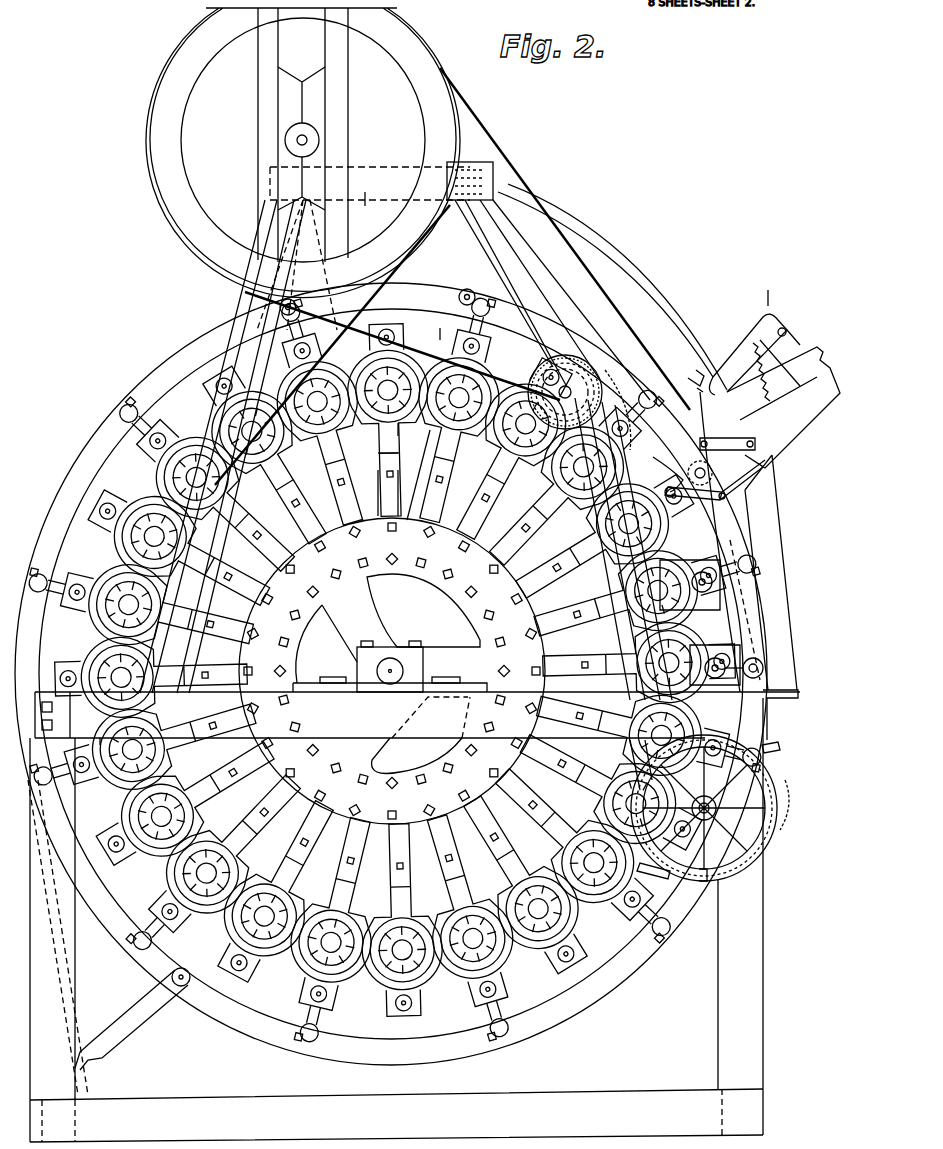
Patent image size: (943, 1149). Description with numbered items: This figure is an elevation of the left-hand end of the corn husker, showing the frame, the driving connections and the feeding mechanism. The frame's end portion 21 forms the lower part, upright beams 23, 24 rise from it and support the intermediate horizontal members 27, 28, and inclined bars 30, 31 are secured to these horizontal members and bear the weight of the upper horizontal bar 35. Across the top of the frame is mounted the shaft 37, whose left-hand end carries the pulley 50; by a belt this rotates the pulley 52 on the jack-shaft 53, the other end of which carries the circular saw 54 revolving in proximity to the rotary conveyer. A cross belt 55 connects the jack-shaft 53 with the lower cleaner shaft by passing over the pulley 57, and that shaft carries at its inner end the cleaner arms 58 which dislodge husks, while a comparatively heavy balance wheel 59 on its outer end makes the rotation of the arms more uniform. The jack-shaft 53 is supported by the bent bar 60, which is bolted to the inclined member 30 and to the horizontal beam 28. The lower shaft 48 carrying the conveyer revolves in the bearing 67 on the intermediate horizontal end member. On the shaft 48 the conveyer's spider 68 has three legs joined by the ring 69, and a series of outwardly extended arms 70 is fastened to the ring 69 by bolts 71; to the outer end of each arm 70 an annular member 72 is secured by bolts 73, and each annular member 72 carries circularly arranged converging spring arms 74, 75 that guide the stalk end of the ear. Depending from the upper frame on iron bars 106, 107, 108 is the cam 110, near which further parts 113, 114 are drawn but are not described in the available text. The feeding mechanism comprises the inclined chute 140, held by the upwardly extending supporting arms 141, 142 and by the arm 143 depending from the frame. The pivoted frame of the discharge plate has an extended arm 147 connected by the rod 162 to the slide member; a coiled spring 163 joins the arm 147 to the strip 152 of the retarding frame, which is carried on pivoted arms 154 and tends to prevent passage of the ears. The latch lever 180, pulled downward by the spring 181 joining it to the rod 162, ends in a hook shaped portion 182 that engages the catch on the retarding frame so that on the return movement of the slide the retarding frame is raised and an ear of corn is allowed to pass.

The end portion 21 is at (428, 1105).
The upright beam 23 is at (748, 975).
The upright beam 24 is at (70, 995).
The intermediate horizontal member 27 is at (792, 690).
The intermediate horizontal member 28 is at (417, 717).
The inclined bar 30 is at (515, 250).
The inclined bar 31 is at (240, 300).
The upper horizontal bar 35 is at (370, 196).
The shaft 37 is at (296, 140).
The lower shaft 48 is at (404, 668).
The pulley 50 is at (165, 122).
The pulley 52 is at (572, 390).
The jack-shaft 53 is at (585, 380).
The circular saw 54 is at (728, 880).
The cross belt 55 is at (612, 556).
The pulley 57 is at (778, 812).
The cleaner arms 58 is at (780, 746).
The balance wheel 59 is at (780, 835).
The bent bar 60 is at (548, 546).
The bearing 67 is at (412, 656).
The spider 68 is at (372, 610).
The ring 69 is at (450, 505).
The arm 70 is at (390, 480).
The bolts 71 is at (385, 565).
The annular member 72 is at (402, 421).
The bolts 73 is at (384, 450).
The spring arms 74 is at (432, 385).
The guide arms 75 is at (388, 420).
The iron bar 106 is at (297, 265).
The iron bar 107 is at (412, 268).
The iron bar 108 is at (500, 228).
The cam 110 is at (435, 324).
The connecting rod 113 is at (565, 285).
The connecting rod 114 is at (540, 262).
The inclined chute 140 is at (780, 450).
The supporting arm 141 is at (765, 560).
The supporting arm 142 is at (700, 535).
The arm 143 is at (608, 302).
The extended arm 147 is at (712, 506).
The strip 152 is at (707, 432).
The arm 154 is at (713, 469).
The rod 162 is at (782, 412).
The coiled spring 163 is at (657, 469).
The latch lever 180 is at (726, 360).
The spring 181 is at (781, 316).
The hook shaped portion 182 is at (695, 392).